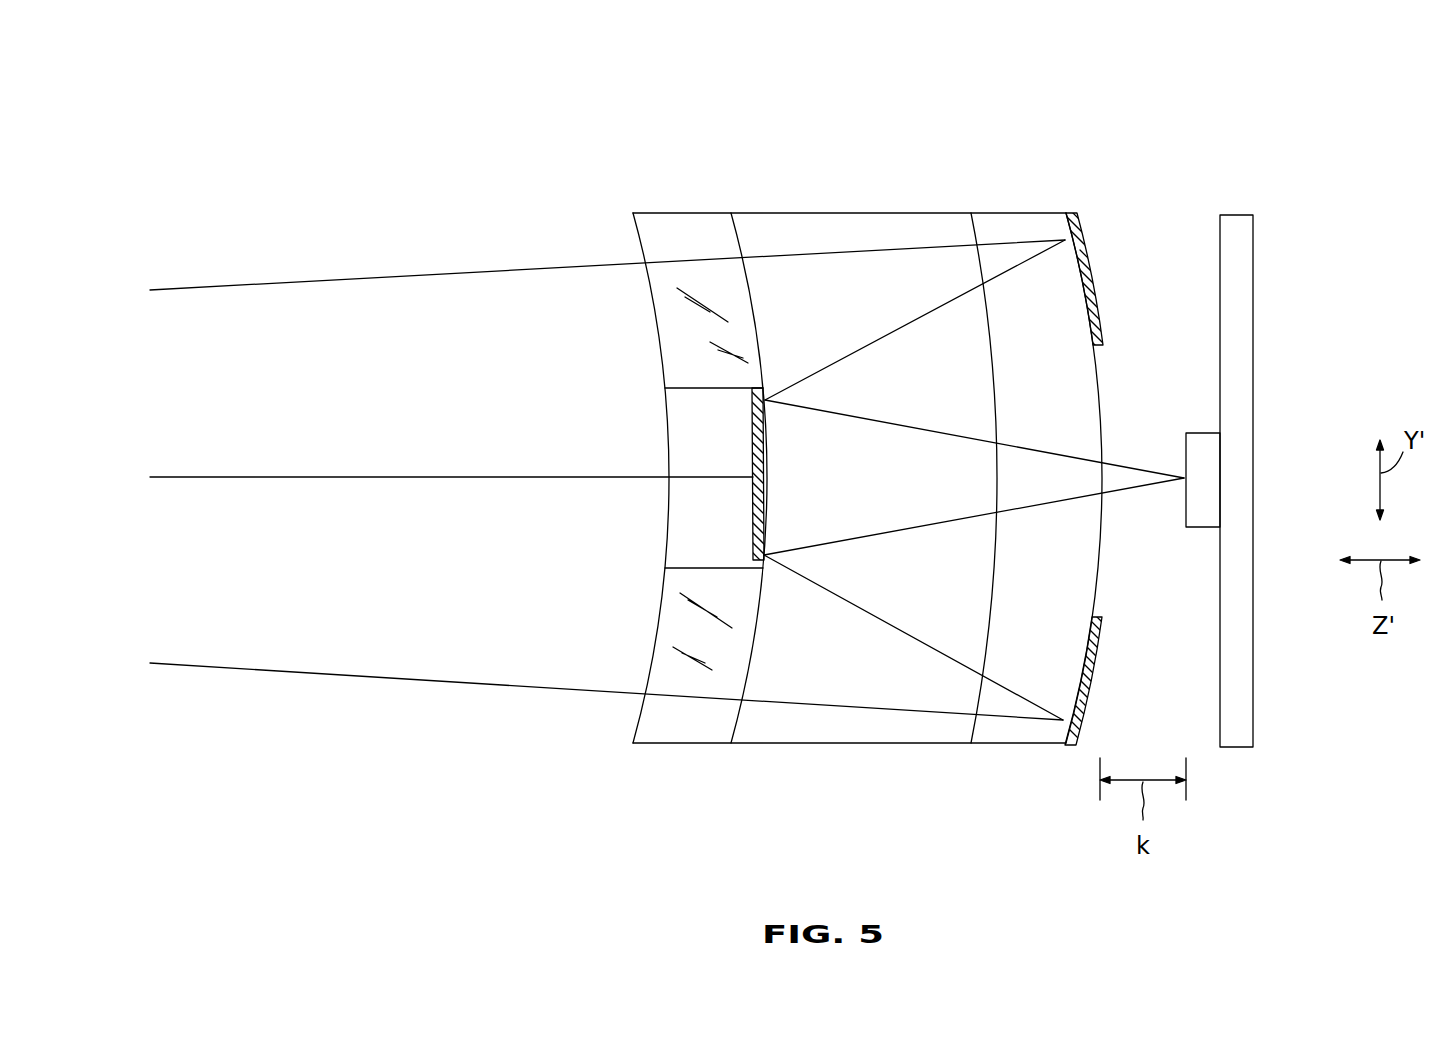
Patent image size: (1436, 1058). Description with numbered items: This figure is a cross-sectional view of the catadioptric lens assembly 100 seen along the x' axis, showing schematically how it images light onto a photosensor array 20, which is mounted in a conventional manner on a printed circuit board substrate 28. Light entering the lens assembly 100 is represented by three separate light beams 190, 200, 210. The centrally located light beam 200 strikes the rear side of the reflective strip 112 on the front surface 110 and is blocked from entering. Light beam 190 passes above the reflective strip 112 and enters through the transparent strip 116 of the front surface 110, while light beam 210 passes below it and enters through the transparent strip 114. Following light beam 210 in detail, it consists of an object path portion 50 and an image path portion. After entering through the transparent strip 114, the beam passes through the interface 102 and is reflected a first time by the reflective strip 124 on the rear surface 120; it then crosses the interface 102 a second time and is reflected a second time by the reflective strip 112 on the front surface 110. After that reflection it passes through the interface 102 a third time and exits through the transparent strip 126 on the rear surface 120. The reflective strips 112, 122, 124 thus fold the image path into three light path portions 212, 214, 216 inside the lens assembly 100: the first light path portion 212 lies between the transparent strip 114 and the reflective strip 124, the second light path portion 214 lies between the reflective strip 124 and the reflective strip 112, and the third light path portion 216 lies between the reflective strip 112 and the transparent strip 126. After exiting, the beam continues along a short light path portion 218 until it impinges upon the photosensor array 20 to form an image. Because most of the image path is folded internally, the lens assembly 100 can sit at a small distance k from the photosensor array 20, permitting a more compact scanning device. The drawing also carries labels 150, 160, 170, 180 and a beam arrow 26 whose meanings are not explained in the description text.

The photosensor array 20 is at (1200, 433).
The incoming beam 26 is at (315, 258).
The printed circuit board substrate 28 is at (1237, 215).
The object path portion 50 is at (313, 695).
The lens assembly 100 is at (1135, 125).
The interface 102 is at (975, 228).
The front surface 110 is at (683, 240).
The reflective strip 112 is at (685, 528).
The transparent strip 114 is at (680, 626).
The transparent strip 116 is at (683, 328).
The rear surface 120 is at (1098, 582).
The reflective strip 122 is at (1088, 248).
The reflective strip 124 is at (1082, 712).
The transparent strip 126 is at (1100, 372).
The lens body 150 is at (847, 750).
The lens top edge 160 is at (848, 213).
The first lens portion 170 is at (798, 667).
The second lens portion 180 is at (1033, 640).
The light beam 190 is at (502, 268).
The light beam 200 is at (455, 477).
The light beam 210 is at (500, 687).
The first light path portion 212 is at (847, 705).
The second light path portion 214 is at (904, 626).
The third light path portion 216 is at (905, 527).
The short light path portion 218 is at (1148, 488).